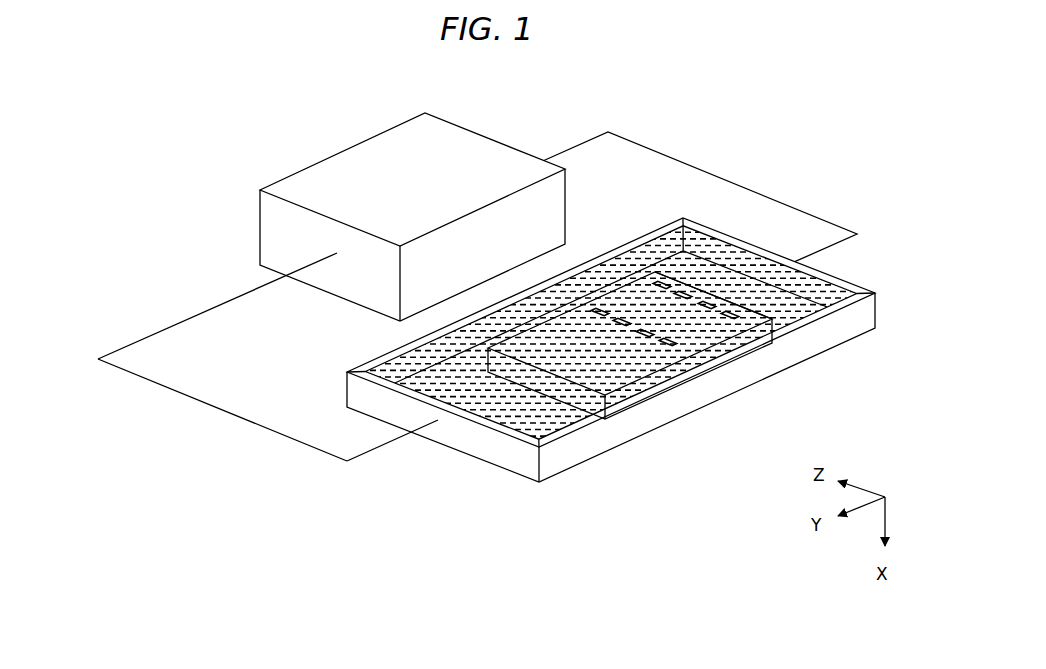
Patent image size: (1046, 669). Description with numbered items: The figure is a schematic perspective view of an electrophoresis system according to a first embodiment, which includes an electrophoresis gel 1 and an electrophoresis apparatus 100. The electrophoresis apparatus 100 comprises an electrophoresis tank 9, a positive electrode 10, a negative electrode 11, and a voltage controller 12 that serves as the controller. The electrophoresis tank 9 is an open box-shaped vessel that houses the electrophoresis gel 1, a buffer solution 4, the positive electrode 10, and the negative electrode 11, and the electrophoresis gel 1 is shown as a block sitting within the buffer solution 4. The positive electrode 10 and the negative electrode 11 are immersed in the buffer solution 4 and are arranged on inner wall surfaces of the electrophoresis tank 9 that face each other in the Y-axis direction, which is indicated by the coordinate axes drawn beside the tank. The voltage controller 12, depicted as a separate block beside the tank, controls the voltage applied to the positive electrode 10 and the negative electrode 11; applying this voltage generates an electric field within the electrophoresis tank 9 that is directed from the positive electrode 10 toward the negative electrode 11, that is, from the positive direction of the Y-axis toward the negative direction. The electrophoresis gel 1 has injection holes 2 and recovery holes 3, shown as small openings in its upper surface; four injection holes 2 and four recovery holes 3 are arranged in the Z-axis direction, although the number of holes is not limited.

The electrophoresis apparatus 100 is at (207, 197).
The electrophoresis gel 1 is at (748, 318).
The injection holes 2 is at (775, 302).
The recovery holes 3 is at (705, 328).
The buffer solution 4 is at (389, 362).
The electrophoresis tank 9 is at (603, 458).
The positive electrode 10 is at (495, 449).
The negative electrode 11 is at (840, 278).
The voltage controller 12 is at (458, 148).